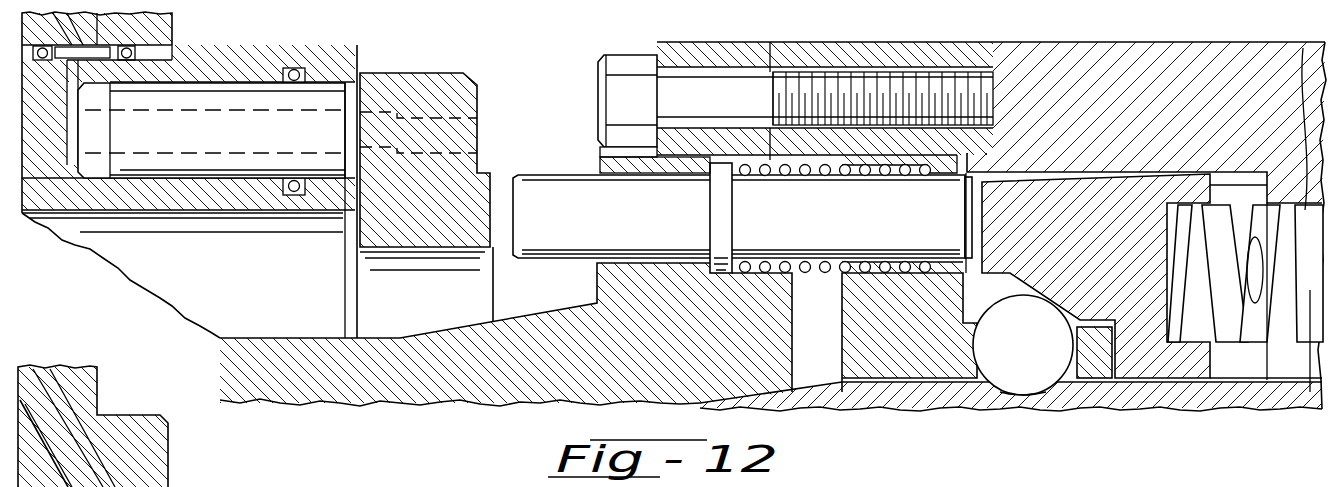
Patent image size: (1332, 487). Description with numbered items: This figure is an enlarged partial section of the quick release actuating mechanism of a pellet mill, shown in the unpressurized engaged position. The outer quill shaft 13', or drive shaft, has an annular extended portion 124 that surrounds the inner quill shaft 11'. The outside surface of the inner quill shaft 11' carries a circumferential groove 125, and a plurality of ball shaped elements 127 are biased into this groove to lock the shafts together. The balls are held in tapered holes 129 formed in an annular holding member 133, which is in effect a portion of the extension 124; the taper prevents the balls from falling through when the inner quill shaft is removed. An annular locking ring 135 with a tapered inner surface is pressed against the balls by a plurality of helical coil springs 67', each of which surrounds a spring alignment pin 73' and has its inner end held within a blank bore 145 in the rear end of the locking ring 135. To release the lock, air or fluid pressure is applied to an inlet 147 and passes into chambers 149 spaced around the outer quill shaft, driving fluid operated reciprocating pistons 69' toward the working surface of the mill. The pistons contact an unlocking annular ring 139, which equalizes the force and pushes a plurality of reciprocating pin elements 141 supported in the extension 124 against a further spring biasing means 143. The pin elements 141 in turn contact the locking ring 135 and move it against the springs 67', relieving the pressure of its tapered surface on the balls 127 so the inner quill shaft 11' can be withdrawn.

The inner quill shaft 11' is at (1012, 307).
The outer quill shaft 13' is at (1146, 122).
The springs 67' is at (1278, 256).
The fluid operated reciprocating pistons 69' is at (211, 255).
The spring alignment pins 73' is at (1289, 361).
The annular extended portion 124 is at (598, 353).
The groove 125 is at (1058, 390).
The ball shaped elements 127 is at (1040, 359).
The tapered holes 129 is at (1083, 330).
The annular holding member 133 is at (923, 357).
The annular locking ring 135 is at (1105, 242).
The unlocking annular ring 139 is at (437, 85).
The reciprocating pin elements 141 is at (562, 192).
The spring biasing means 143 is at (840, 168).
The blank bore 145 is at (1217, 342).
The inlet 147 is at (158, 19).
The chambers 149 is at (210, 68).